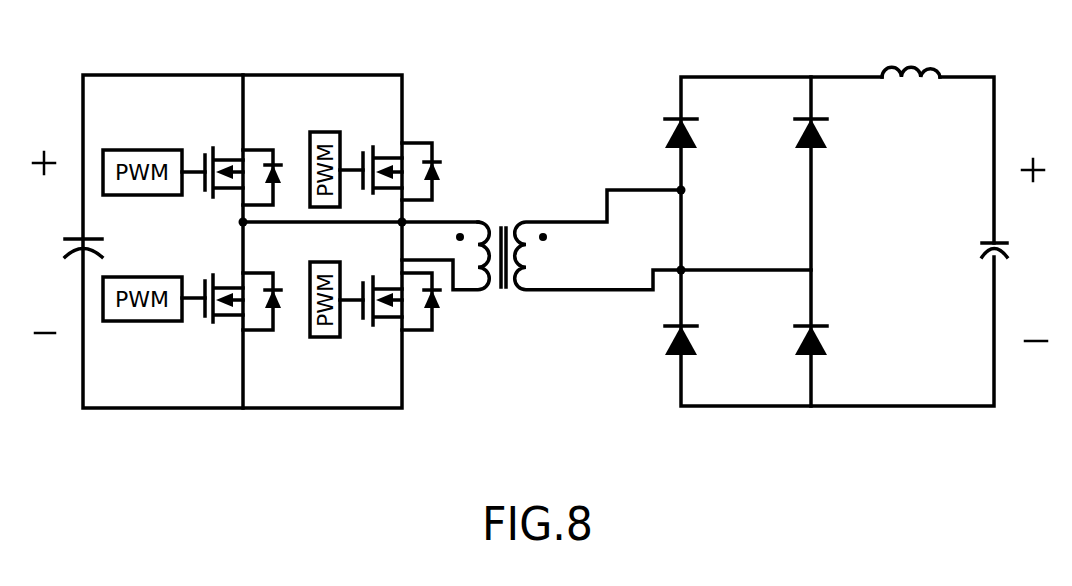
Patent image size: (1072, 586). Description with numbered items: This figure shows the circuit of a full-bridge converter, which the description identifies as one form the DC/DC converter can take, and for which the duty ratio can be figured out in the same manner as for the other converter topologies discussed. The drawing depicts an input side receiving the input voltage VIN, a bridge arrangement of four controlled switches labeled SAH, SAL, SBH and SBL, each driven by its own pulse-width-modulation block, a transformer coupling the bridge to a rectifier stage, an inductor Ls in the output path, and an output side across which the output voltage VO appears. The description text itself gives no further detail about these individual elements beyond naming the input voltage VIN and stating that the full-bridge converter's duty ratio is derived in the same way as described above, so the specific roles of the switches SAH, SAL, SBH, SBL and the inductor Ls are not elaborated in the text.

The switch A high SAH is at (200, 202).
The switch A low SAL is at (198, 328).
The switch B high SBH is at (360, 200).
The switch B low SBL is at (359, 330).
The inductor Ls is at (912, 95).
The input voltage VIN is at (44, 213).
The output voltage VO is at (1029, 258).